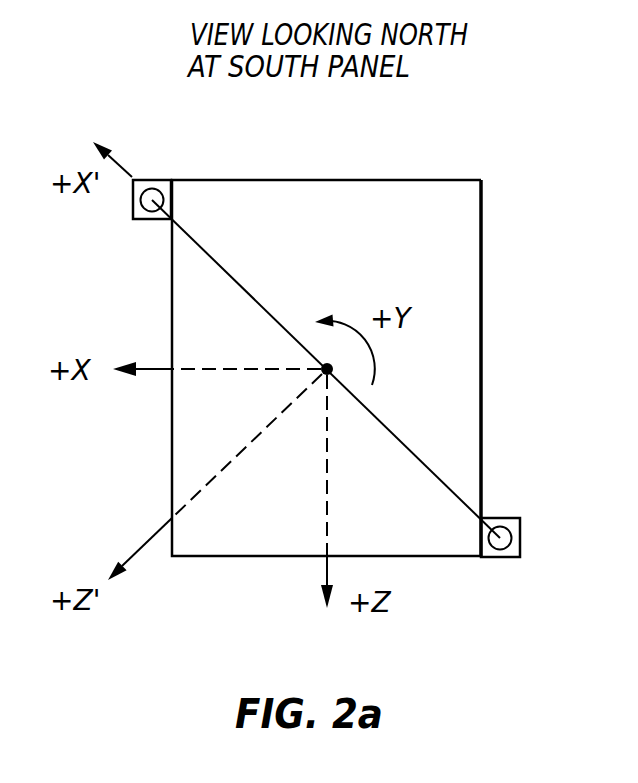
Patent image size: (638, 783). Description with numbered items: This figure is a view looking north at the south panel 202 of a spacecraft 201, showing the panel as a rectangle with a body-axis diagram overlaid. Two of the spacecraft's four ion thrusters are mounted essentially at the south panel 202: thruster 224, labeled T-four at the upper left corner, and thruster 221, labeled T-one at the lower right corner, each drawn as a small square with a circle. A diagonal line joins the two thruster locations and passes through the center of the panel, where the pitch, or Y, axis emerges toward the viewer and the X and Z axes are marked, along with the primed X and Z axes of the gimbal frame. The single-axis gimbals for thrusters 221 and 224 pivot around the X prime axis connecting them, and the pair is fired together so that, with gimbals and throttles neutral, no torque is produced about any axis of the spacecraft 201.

The spacecraft 201 is at (498, 263).
The south panel 202 is at (370, 190).
The thruster 224 is at (146, 179).
The thruster 221 is at (520, 543).